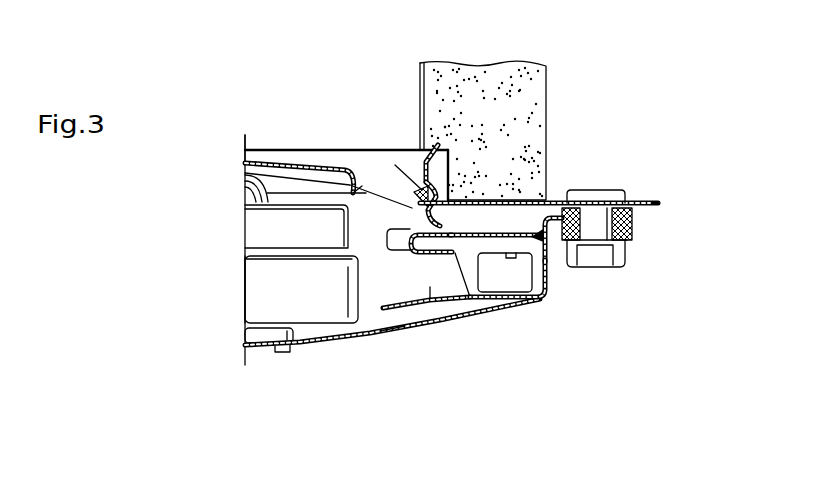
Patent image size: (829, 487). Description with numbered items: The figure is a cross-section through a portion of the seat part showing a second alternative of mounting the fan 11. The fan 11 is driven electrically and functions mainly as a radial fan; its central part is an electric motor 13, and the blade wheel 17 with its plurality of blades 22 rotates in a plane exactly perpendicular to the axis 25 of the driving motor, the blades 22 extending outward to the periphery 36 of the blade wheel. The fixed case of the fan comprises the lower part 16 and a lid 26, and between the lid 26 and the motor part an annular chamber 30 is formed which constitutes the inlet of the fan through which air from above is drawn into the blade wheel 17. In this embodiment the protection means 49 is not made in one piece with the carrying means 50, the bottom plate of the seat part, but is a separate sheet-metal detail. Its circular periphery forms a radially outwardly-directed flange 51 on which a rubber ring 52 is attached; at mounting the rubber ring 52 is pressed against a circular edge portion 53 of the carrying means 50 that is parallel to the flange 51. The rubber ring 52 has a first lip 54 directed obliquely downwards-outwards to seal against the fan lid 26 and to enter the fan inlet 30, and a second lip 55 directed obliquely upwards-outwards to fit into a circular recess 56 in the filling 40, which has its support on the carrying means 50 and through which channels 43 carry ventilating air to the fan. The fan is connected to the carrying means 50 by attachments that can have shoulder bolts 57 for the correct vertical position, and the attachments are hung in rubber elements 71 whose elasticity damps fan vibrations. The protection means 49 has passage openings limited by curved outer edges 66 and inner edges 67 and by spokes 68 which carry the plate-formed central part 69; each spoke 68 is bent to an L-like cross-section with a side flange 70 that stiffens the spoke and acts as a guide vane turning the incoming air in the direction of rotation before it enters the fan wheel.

The fan 11 is at (255, 360).
The electric motor 13 is at (315, 307).
The lower part of the fan case 16 is at (347, 338).
The blade wheel 17 is at (392, 332).
The blades 22 is at (430, 288).
The axis of the driving motor 25 is at (347, 231).
The lid 26 is at (548, 237).
The annular chamber 30 is at (248, 270).
The periphery of the blade wheel 36 is at (548, 288).
The filling 40 is at (542, 108).
The channels 43 is at (420, 85).
The protection means 49 is at (233, 153).
The carrying means 50 is at (656, 206).
The flange 51 is at (450, 193).
The rubber ring 52 is at (458, 182).
The edge portion 53 is at (478, 227).
The first lip 54 is at (458, 256).
The second lip 55 is at (436, 148).
The circular recess 56 is at (424, 171).
The shoulder bolts 57 is at (598, 229).
The outer edges 66 is at (412, 185).
The inner edges 67 is at (358, 186).
The spokes 68 is at (368, 178).
The central part 69 is at (250, 150).
The side flange 70 is at (366, 170).
The rubber elements 71 is at (633, 238).